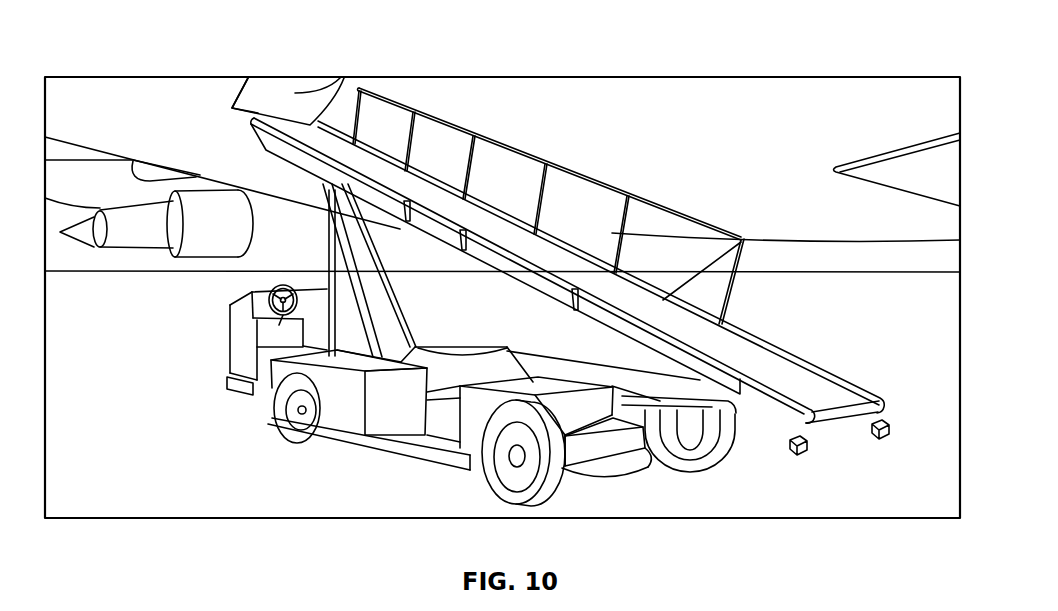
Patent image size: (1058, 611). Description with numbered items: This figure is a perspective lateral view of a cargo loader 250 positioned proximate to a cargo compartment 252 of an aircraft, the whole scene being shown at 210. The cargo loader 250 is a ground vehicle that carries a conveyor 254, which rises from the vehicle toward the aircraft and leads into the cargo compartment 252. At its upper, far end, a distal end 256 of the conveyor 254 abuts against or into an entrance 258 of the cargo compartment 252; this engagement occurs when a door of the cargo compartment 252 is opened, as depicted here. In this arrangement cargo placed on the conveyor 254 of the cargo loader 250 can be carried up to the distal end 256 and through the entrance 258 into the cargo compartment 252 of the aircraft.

The aircraft 210 is at (738, 79).
The cargo loader 250 is at (390, 466).
The cargo compartment 252 is at (539, 234).
The conveyor 254 is at (802, 384).
The distal end 256 is at (242, 92).
The entrance 258 is at (275, 85).